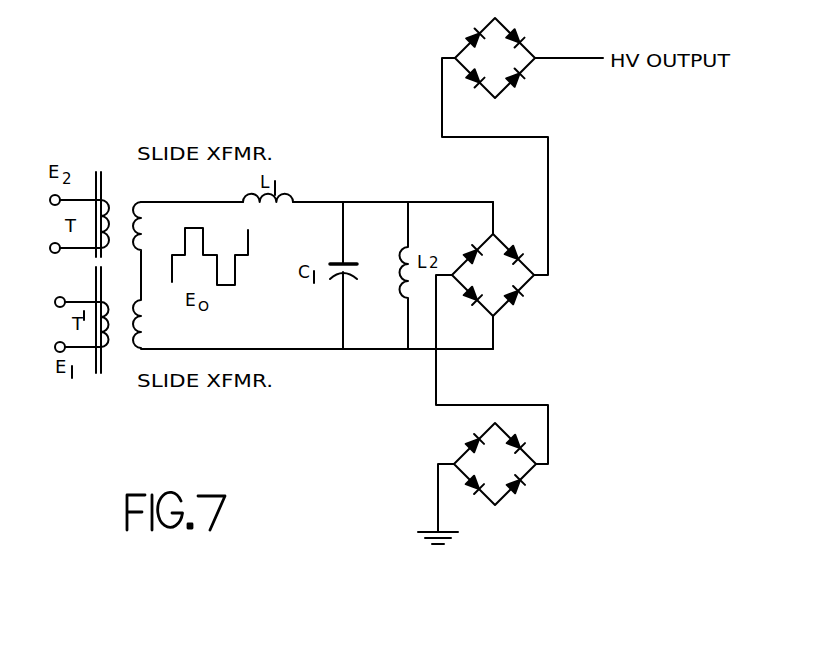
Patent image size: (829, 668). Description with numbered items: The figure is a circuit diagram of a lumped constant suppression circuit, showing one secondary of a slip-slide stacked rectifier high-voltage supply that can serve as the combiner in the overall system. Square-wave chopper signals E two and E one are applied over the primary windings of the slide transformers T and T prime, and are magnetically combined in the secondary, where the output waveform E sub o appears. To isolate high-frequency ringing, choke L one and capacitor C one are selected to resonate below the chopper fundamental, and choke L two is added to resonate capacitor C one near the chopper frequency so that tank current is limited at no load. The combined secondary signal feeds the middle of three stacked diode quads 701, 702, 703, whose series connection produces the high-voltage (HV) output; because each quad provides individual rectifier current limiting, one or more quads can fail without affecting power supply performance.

The diode quad 701 is at (527, 68).
The diode quad 702 is at (527, 282).
The diode quad 703 is at (530, 472).